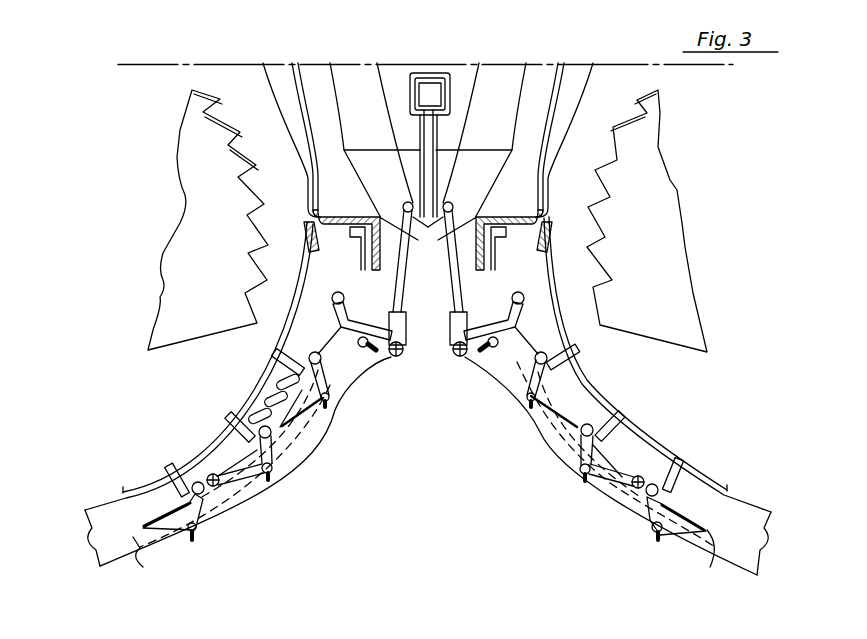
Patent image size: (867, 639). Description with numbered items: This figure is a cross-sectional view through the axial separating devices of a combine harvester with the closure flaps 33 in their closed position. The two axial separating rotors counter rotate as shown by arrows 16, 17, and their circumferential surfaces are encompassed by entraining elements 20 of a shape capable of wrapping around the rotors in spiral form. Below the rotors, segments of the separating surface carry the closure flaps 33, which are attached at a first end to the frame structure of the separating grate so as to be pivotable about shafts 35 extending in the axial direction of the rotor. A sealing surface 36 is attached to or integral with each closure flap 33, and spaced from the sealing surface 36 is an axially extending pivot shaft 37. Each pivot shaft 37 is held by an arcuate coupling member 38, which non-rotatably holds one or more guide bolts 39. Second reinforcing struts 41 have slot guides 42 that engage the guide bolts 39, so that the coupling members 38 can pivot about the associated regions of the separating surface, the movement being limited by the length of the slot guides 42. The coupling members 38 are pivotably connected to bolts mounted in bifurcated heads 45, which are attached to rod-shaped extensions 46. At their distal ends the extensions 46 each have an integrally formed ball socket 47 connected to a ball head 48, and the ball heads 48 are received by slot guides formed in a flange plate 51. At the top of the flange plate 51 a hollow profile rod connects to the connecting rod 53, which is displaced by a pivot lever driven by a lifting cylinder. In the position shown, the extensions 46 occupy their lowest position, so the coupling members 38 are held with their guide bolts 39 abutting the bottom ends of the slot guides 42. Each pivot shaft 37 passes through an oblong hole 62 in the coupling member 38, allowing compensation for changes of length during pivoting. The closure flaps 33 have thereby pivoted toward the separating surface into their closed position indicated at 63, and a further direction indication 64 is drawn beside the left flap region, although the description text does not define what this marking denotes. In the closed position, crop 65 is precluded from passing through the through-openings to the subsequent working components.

The arrow 16 is at (217, 247).
The arrow 17 is at (632, 255).
The entraining elements 20 is at (218, 207).
The closure flaps 33 is at (156, 530).
The shafts 35 is at (536, 360).
The sealing surface 36 is at (157, 519).
The pivot shaft 37 is at (655, 529).
The arcuate coupling member 38 is at (232, 517).
The guide bolts 39 is at (211, 476).
The second reinforcing struts 41 is at (107, 538).
The slot guides 42 is at (228, 440).
The bifurcated heads 45 is at (458, 328).
The rod-shaped extensions 46 is at (458, 264).
The ball socket 47 is at (404, 205).
The ball head 48 is at (413, 197).
The flange plate 51 is at (428, 167).
The connecting rod 53 is at (424, 95).
The oblong hole 62 is at (271, 480).
The closed position 63 is at (676, 503).
The direction arrow 64 is at (245, 363).
The crop 65 is at (283, 390).